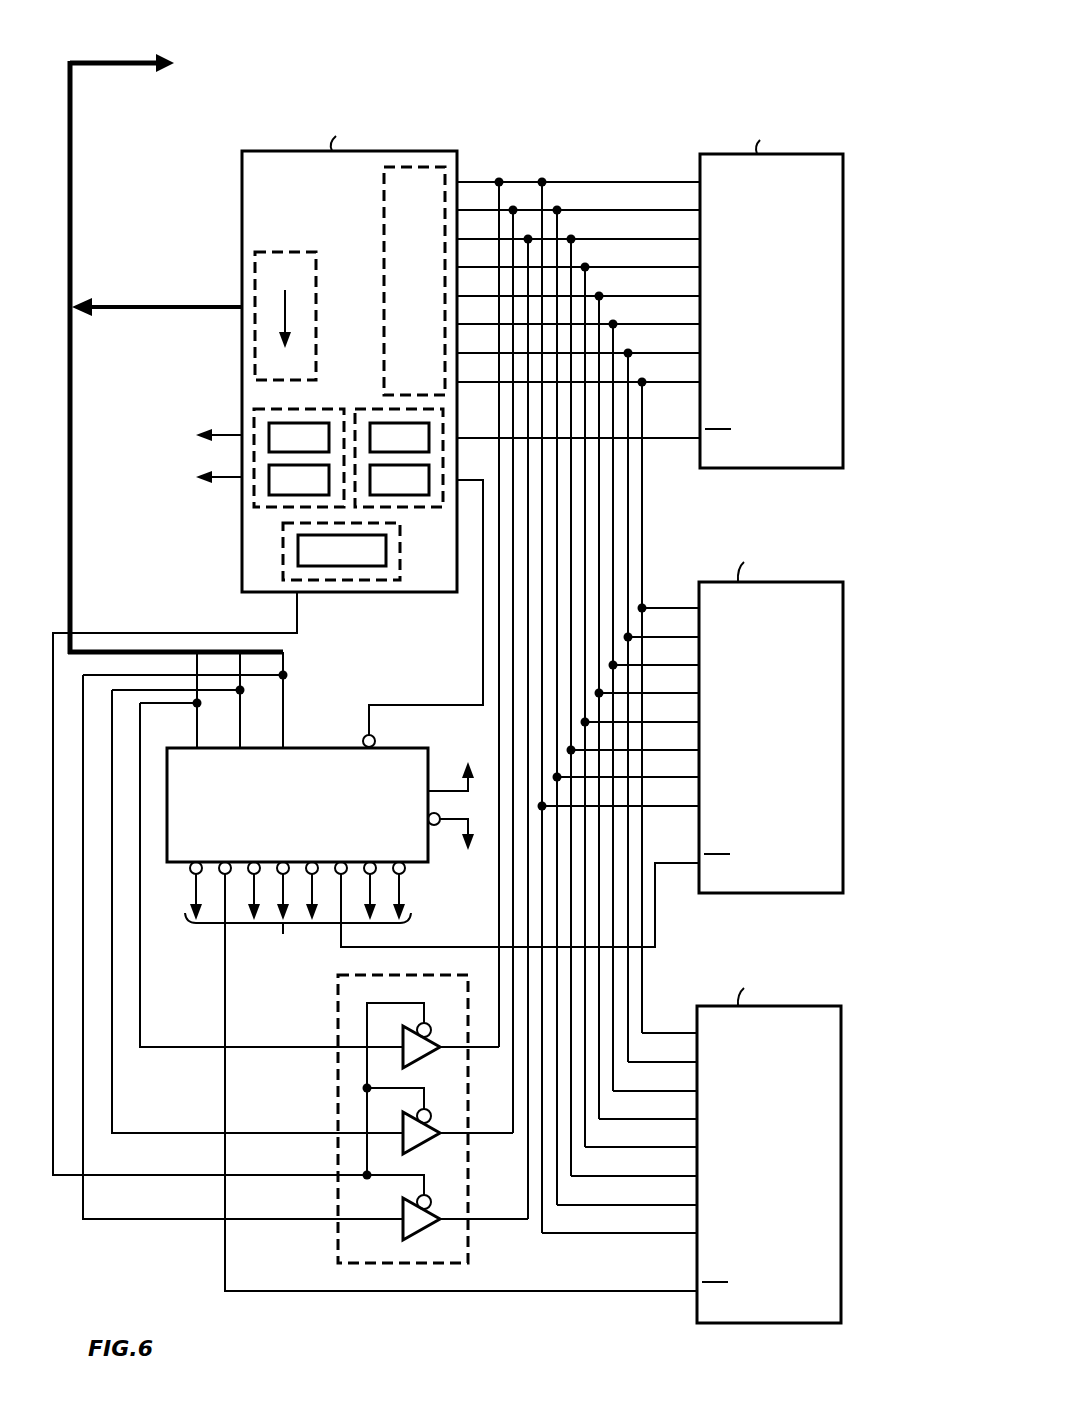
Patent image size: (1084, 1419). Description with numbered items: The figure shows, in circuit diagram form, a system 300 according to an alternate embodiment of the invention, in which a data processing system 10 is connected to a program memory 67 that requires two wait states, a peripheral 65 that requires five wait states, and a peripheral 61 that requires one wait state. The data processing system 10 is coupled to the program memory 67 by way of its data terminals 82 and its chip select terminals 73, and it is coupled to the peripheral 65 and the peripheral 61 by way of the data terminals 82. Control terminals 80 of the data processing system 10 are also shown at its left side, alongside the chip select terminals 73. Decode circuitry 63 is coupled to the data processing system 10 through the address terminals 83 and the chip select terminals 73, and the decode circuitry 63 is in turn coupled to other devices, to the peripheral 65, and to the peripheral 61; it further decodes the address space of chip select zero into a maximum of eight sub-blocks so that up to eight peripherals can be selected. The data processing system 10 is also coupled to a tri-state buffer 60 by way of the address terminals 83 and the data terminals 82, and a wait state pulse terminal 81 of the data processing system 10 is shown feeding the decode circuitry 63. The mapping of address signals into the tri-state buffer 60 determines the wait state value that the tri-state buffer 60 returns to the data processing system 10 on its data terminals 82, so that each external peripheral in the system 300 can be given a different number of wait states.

The system 300 is at (654, 42).
The data processing system 10 is at (298, 194).
The data terminals 82 is at (448, 166).
The address terminals 83 is at (255, 270).
The chip select terminals 73 is at (355, 430).
The control terminals 80 is at (254, 484).
The wait state pulse terminal 81 is at (360, 581).
The program memory 67 is at (826, 441).
The peripheral 65 is at (826, 866).
The peripheral 61 is at (826, 1294).
The decode circuitry 63 is at (191, 870).
The tri-state buffer 60 is at (416, 1264).